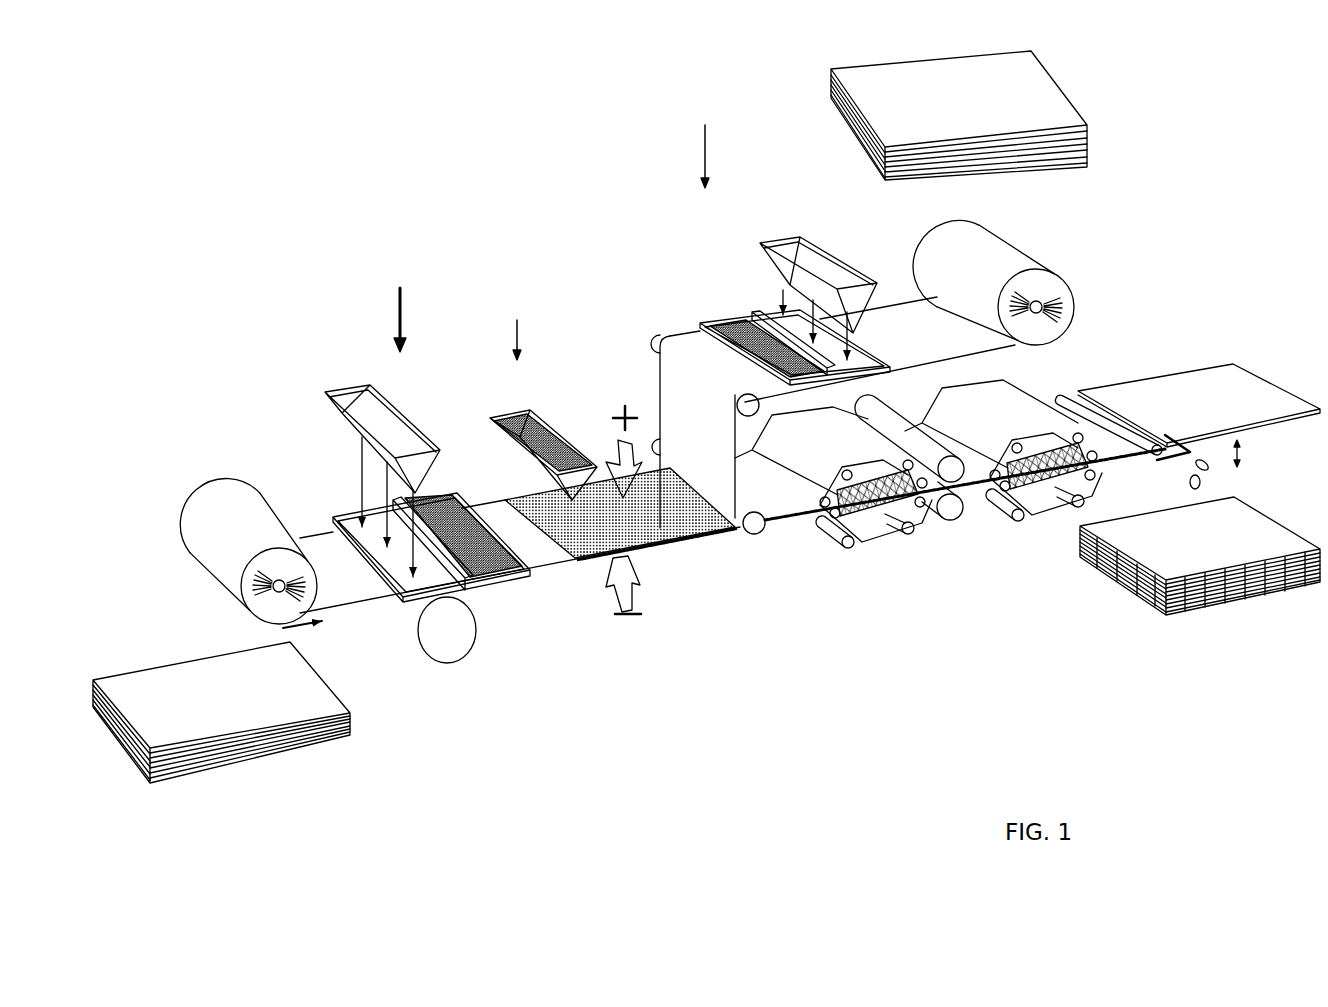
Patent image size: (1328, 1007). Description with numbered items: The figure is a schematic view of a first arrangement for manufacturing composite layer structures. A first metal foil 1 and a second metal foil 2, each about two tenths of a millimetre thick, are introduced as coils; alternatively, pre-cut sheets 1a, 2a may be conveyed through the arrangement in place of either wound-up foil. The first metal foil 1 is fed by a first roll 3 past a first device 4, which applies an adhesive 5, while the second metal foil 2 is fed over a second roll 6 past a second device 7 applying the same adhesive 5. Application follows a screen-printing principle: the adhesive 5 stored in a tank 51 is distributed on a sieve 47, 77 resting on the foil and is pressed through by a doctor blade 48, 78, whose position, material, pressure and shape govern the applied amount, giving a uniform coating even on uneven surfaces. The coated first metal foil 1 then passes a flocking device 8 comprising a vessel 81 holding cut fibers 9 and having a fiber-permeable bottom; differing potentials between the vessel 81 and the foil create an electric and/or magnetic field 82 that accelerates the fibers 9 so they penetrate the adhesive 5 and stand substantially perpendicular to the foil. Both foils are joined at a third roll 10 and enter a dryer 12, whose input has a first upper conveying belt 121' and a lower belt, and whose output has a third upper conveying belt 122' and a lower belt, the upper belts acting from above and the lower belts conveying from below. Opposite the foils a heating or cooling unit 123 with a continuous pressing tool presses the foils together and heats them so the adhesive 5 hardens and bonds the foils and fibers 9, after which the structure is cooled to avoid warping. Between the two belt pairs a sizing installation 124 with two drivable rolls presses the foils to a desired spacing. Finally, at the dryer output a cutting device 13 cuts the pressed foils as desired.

The first metal foil 1 is at (180, 497).
The pre-cut sheets 1a is at (228, 710).
The second metal foil 2 is at (1040, 250).
The pre-cut sheets 2a is at (978, 114).
The first roll 3 is at (393, 607).
The first device 4 is at (398, 305).
The adhesive 5 is at (338, 487).
The second roll 6 is at (656, 333).
The second device 7 is at (702, 142).
The flocking device 8 is at (514, 325).
The fibers 9 is at (508, 478).
The third roll 10 is at (758, 535).
The dryer 12 is at (1067, 360).
The cutting device 13 is at (1221, 421).
The sieve 47 is at (375, 578).
The doctor blade 48 is at (472, 583).
The tank 51 is at (330, 390).
The sieve 77 is at (735, 305).
The doctor blade 78 is at (757, 300).
The vessel 81 is at (505, 408).
The electric and/or magnetic field 82 is at (655, 625).
The first upper conveying belt 121' is at (801, 451).
The third upper conveying belt 122' is at (991, 424).
The heating or cooling unit 123 is at (872, 540).
The sizing installation 124 is at (958, 515).